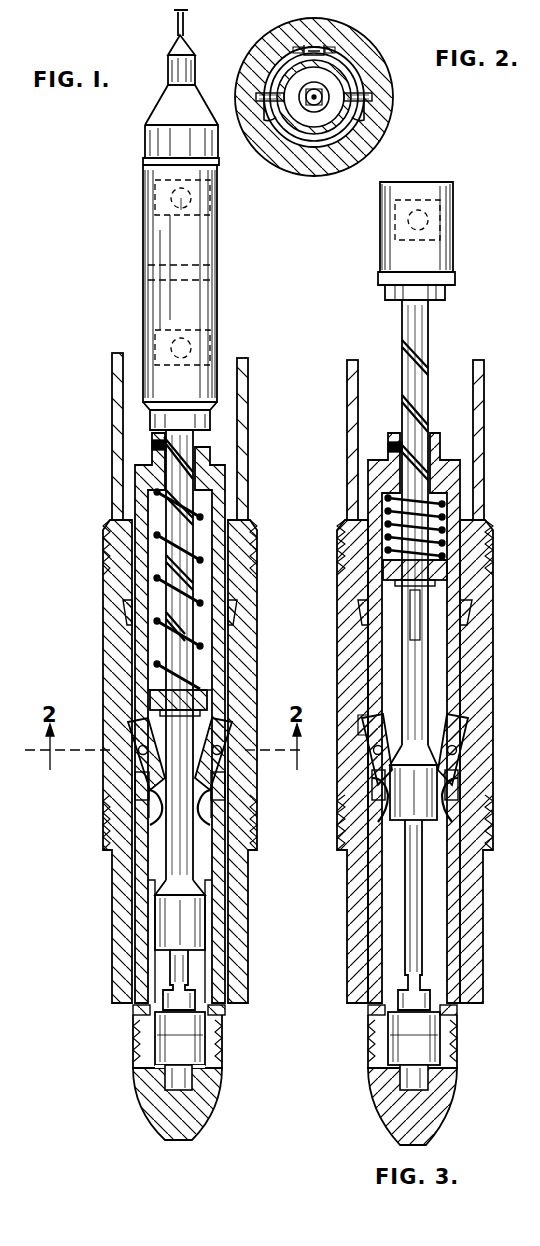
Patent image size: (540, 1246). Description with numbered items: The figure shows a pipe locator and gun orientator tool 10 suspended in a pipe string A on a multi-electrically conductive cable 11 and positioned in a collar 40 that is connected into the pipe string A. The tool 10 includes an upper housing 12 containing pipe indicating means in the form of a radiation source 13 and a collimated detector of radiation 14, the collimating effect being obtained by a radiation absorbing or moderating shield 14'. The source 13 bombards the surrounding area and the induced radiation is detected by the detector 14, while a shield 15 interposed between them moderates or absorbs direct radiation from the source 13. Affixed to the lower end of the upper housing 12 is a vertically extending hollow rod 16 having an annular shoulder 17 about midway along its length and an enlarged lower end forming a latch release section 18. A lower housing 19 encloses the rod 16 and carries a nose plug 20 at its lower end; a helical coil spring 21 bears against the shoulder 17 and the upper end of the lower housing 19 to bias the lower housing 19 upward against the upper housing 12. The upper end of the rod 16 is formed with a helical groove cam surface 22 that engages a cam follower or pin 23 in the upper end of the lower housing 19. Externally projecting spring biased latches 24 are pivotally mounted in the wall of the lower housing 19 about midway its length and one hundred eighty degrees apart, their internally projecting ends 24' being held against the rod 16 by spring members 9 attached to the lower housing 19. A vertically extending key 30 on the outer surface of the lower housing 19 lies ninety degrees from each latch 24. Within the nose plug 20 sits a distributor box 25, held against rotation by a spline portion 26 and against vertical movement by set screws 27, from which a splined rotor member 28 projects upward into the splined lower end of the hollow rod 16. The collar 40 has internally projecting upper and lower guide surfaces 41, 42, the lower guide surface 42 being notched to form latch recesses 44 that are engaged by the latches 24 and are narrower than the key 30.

In FIG. 1, the spring members 9 is at (148, 796).
In FIG. 3, the spring members 9 is at (380, 786).
In FIG. 1, the pipe locator tool 10 is at (218, 242).
In FIG. 3, the pipe locator tool 10 is at (450, 204).
In FIG. 1, the multi-electrically conductive cable 11 is at (176, 22).
In FIG. 1, the upper housing 12 is at (195, 302).
In FIG. 3, the upper housing 12 is at (435, 251).
In FIG. 1, the radiation source 13 is at (160, 345).
In FIG. 3, the radiation source 13 is at (400, 218).
In FIG. 1, the collimated detector of radiation 14 is at (122, 195).
In FIG. 1, the radiation absorbing or moderating shield 14' is at (221, 205).
In FIG. 1, the shield 15 is at (160, 275).
In FIG. 1, the hollow rod 16 is at (196, 445).
In FIG. 2, the hollow rod 16 is at (308, 108).
In FIG. 3, the hollow rod 16 is at (420, 325).
In FIG. 1, the annular shoulder 17 is at (150, 700).
In FIG. 2, the annular shoulder 17 is at (329, 108).
In FIG. 3, the annular shoulder 17 is at (425, 570).
In FIG. 1, the latch release section 18 is at (165, 920).
In FIG. 3, the latch release section 18 is at (405, 802).
In FIG. 1, the lower housing 19 is at (215, 472).
In FIG. 2, the lower housing 19 is at (293, 63).
In FIG. 3, the lower housing 19 is at (455, 478).
In FIG. 1, the nose plug 20 is at (190, 1110).
In FIG. 3, the nose plug 20 is at (385, 1110).
In FIG. 1, the helical coil spring 21 is at (203, 560).
In FIG. 3, the helical coil spring 21 is at (440, 513).
In FIG. 1, the helical groove cam surface 22 is at (165, 510).
In FIG. 3, the helical groove cam surface 22 is at (405, 342).
In FIG. 1, the cam follower or pin 23 is at (158, 444).
In FIG. 3, the cam follower or pin 23 is at (395, 447).
In FIG. 1, the spring biased latches 24 is at (180, 729).
In FIG. 2, the spring biased latches 24 is at (342, 111).
In FIG. 3, the spring biased latches 24 is at (421, 745).
In FIG. 1, the internally projecting ends of latches 24' is at (179, 786).
In FIG. 3, the internally projecting ends of latches 24' is at (455, 779).
In FIG. 1, the distributor box 25 is at (170, 1045).
In FIG. 3, the distributor box 25 is at (425, 1048).
In FIG. 1, the spline portion 26 is at (185, 1077).
In FIG. 3, the spline portion 26 is at (420, 1080).
In FIG. 1, the set screws 27 is at (135, 1010).
In FIG. 3, the set screws 27 is at (372, 1012).
In FIG. 1, the splined rotor member 28 is at (188, 964).
In FIG. 2, the splined rotor member 28 is at (321, 108).
In FIG. 3, the splined rotor member 28 is at (415, 875).
In FIG. 2, the key 30 is at (326, 47).
In FIG. 1, the collar 40 is at (112, 676).
In FIG. 2, the collar 40 is at (376, 87).
In FIG. 3, the collar 40 is at (345, 605).
In FIG. 1, the upper guide surface 41 is at (232, 612).
In FIG. 3, the upper guide surface 41 is at (358, 620).
In FIG. 1, the lower guide surface 42 is at (222, 752).
In FIG. 3, the lower guide surface 42 is at (468, 746).
In FIG. 3, the latch recesses 44 is at (360, 722).
In FIG. 1, the pipe string A is at (244, 390).
In FIG. 3, the pipe string A is at (480, 392).